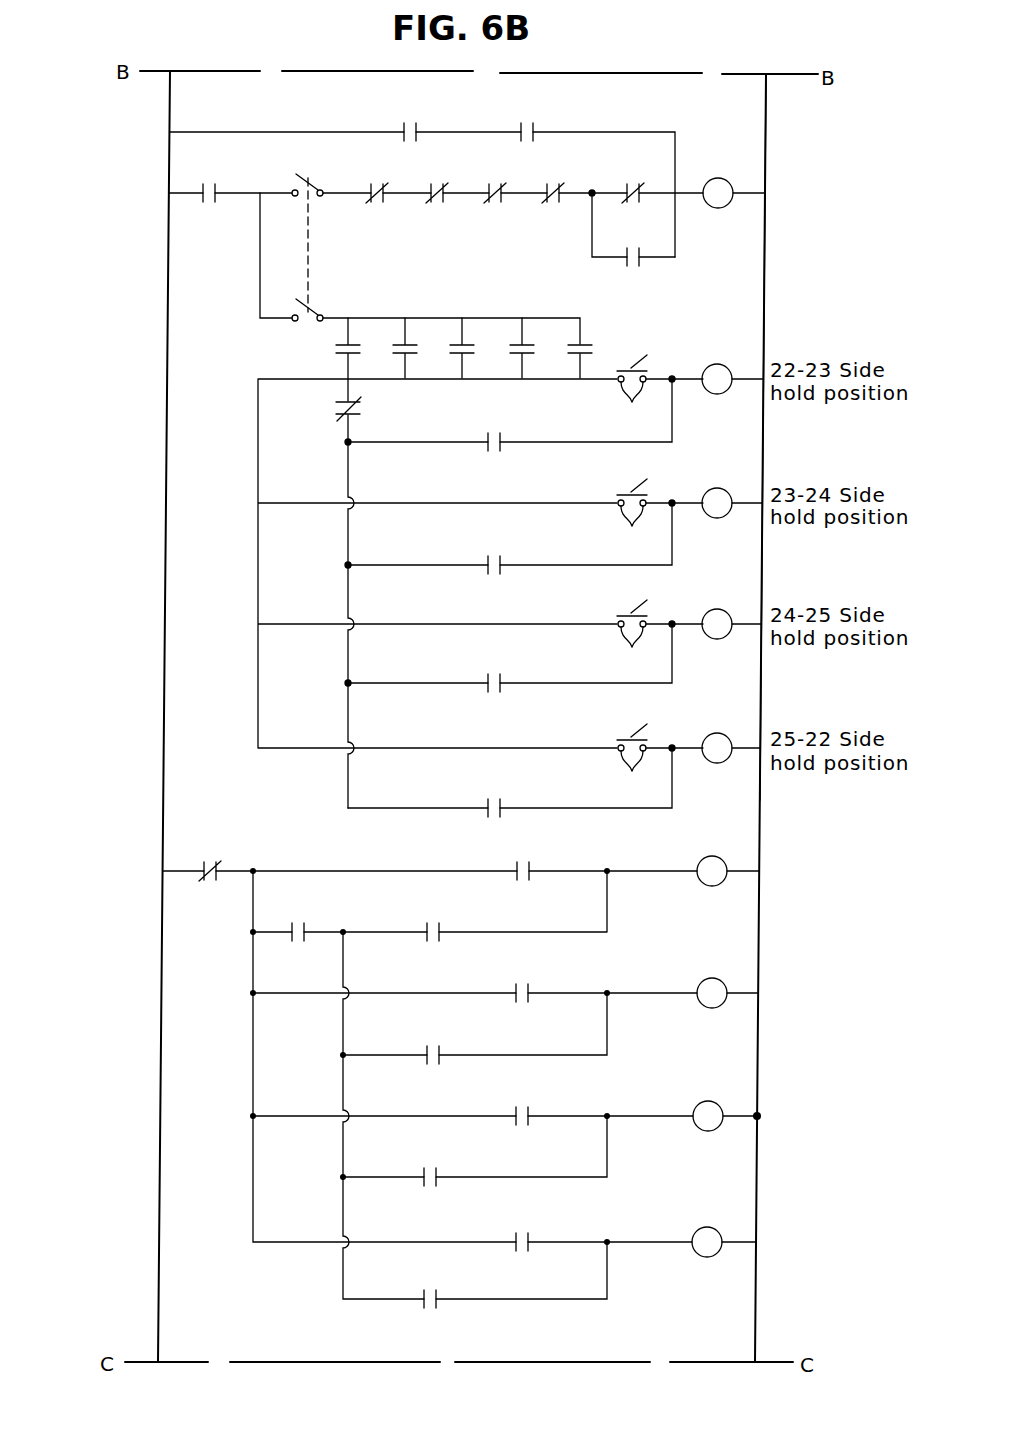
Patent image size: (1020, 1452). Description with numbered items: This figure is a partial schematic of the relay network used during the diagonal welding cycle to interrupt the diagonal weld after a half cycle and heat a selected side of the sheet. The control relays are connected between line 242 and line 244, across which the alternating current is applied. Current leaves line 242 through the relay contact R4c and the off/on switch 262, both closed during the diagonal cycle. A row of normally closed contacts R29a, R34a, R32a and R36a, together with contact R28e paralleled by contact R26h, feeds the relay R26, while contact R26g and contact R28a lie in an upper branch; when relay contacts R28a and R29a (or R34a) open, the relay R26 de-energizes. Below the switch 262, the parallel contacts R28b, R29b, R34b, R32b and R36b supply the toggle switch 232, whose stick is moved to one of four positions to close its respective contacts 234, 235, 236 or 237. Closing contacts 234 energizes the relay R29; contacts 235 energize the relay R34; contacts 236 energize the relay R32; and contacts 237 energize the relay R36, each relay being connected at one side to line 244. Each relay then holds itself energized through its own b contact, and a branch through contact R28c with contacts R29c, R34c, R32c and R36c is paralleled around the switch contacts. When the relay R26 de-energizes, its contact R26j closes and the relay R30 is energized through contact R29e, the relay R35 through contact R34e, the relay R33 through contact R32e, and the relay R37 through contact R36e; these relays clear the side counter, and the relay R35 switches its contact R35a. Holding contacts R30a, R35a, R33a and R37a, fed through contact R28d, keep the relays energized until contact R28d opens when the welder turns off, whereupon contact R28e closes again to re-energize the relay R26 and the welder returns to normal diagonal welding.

The line 242 is at (172, 117).
The line 244 is at (766, 139).
The off/on switch 262 is at (322, 210).
The toggle switch 232 is at (628, 356).
The contacts 234 is at (657, 405).
The contacts 235 is at (657, 530).
The contacts 236 is at (657, 647).
The contacts 237 is at (656, 772).
The relay contact R4c is at (208, 184).
The relay contact R26g is at (405, 123).
The relay contact R28a is at (532, 122).
The normally closed relay contact R29a is at (376, 184).
The relay contact R34a is at (427, 184).
The relay contact R32a is at (495, 184).
The relay contact R36a is at (558, 184).
The relay contact R28e is at (633, 203).
The relay contact R26h is at (632, 268).
The relay R26 is at (719, 178).
The relay contact R28b is at (332, 362).
The relay contact R29b is at (389, 362).
The relay contact R34b is at (446, 362).
The relay contact R32b is at (506, 362).
The relay contact R36b is at (566, 362).
The relay contact R28c is at (336, 408).
The relay contact R29c is at (495, 431).
The relay contact R34c is at (495, 554).
The relay contact R32c is at (495, 672).
The relay contact R36c is at (495, 797).
The relay R29 is at (719, 364).
The relay R34 is at (719, 488).
The relay R32 is at (719, 609).
The relay R36 is at (719, 733).
The relay contact R26j is at (208, 862).
The relay contact R29e is at (523, 861).
The relay R30 is at (714, 856).
The relay contact R28d is at (298, 922).
The relay contact R30a is at (433, 922).
The relay contact R34e is at (522, 983).
The relay R35 is at (714, 978).
The relay contact R35a is at (433, 1045).
The relay contact R32e is at (522, 1106).
The relay R33 is at (710, 1101).
The relay contact R33a is at (430, 1167).
The relay contact R36e is at (522, 1232).
The relay R37 is at (709, 1227).
The relay contact R37a is at (430, 1289).